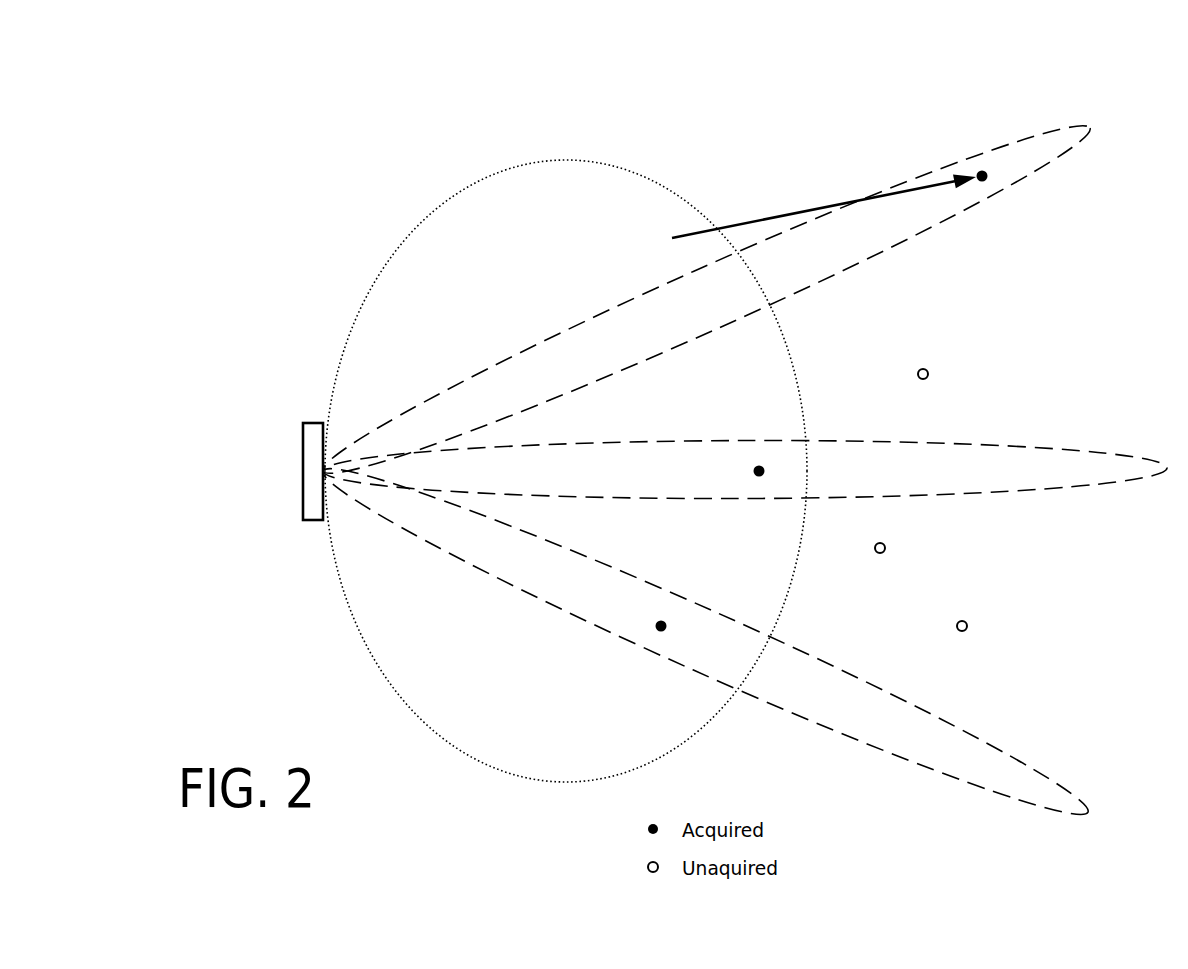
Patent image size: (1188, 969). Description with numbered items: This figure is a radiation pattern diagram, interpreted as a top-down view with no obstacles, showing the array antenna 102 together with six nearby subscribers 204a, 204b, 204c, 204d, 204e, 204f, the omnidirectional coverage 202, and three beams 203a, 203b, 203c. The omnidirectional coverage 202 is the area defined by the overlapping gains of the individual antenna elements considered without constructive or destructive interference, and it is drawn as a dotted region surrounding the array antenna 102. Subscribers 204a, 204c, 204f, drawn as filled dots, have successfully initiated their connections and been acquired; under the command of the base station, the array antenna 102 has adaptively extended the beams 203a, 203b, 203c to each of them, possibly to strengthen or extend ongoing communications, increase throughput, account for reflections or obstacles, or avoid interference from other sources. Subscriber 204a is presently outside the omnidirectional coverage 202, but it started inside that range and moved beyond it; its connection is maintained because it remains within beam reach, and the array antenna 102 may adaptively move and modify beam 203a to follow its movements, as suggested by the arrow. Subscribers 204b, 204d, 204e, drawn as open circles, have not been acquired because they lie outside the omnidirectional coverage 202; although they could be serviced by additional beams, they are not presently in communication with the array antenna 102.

The array antenna 102 is at (303, 470).
The omnidirectional coverage 202 is at (410, 233).
The beam 203a is at (1082, 126).
The beam 203b is at (1127, 458).
The beam 203c is at (1065, 790).
The subscriber 204a is at (984, 179).
The subscriber 204b is at (926, 370).
The subscriber 204c is at (759, 476).
The subscriber 204d is at (880, 553).
The subscriber 204e is at (966, 622).
The subscriber 204f is at (661, 631).